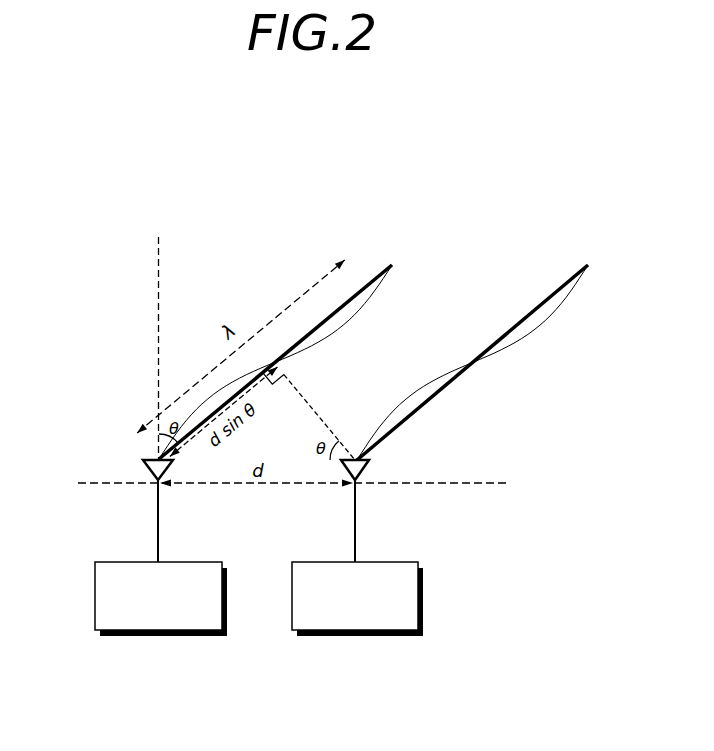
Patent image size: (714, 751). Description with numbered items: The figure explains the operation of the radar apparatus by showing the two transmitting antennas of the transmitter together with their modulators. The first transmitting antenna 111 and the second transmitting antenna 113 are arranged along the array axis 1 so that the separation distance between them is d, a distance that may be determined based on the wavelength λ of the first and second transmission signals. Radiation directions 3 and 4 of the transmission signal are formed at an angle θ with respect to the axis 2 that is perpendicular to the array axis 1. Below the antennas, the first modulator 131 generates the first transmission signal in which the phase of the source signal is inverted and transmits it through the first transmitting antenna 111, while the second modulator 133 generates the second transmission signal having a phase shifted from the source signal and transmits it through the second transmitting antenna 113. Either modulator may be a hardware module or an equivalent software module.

The array axis 1 is at (284, 483).
The axis perpendicular to the array axis 2 is at (158, 335).
The radiation direction 3 is at (281, 357).
The radiation direction 4 is at (480, 357).
The first transmitting antenna 111 is at (147, 482).
The second transmitting antenna 113 is at (362, 484).
The first modulator 131 is at (157, 637).
The second modulator 133 is at (355, 637).